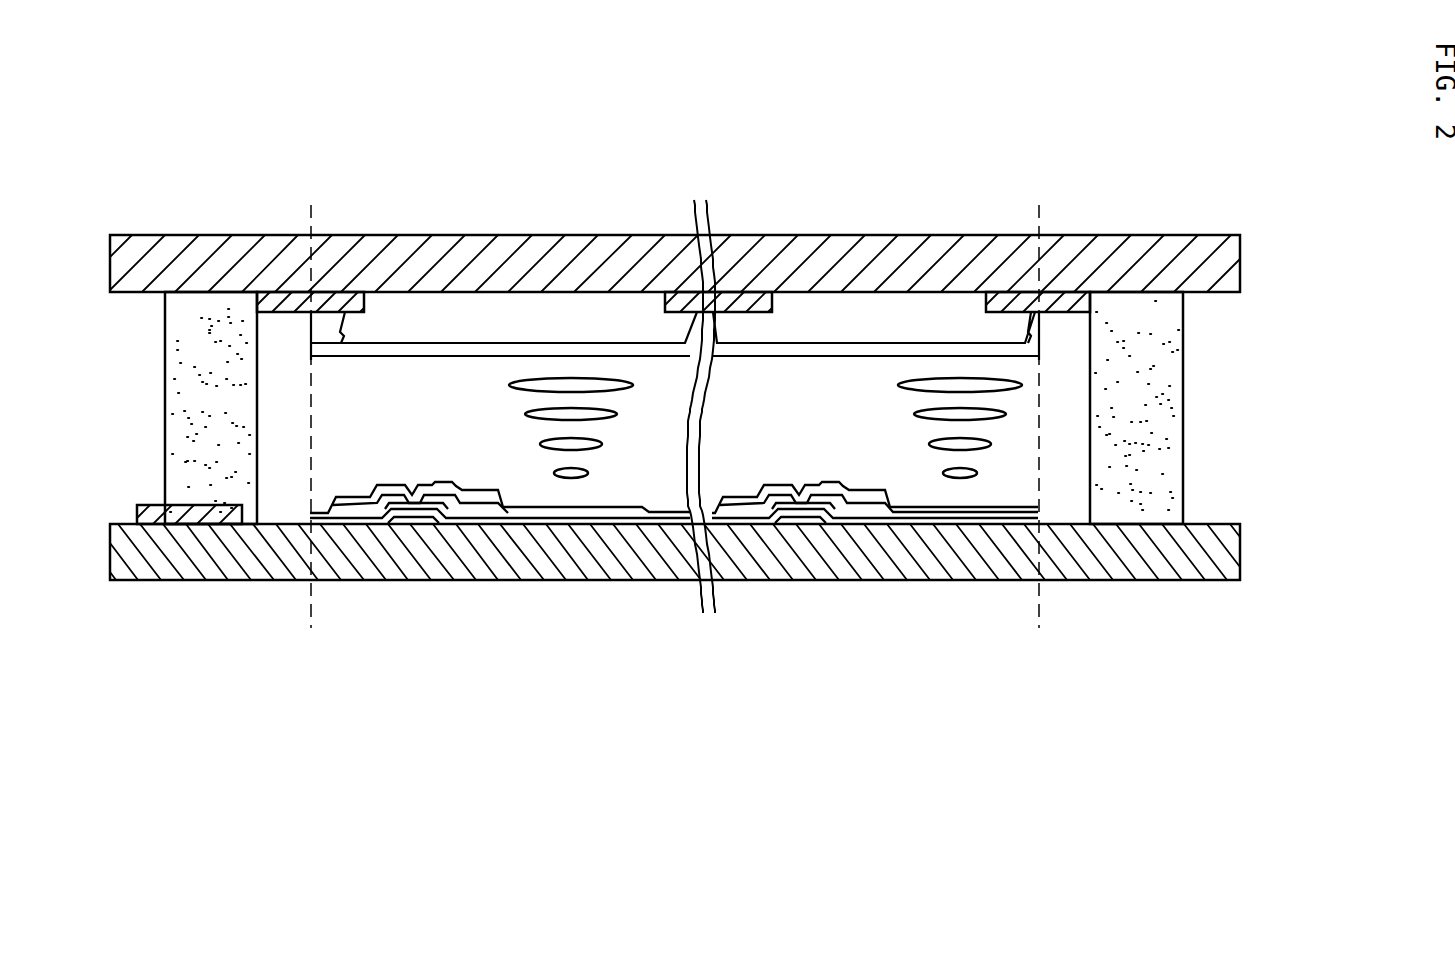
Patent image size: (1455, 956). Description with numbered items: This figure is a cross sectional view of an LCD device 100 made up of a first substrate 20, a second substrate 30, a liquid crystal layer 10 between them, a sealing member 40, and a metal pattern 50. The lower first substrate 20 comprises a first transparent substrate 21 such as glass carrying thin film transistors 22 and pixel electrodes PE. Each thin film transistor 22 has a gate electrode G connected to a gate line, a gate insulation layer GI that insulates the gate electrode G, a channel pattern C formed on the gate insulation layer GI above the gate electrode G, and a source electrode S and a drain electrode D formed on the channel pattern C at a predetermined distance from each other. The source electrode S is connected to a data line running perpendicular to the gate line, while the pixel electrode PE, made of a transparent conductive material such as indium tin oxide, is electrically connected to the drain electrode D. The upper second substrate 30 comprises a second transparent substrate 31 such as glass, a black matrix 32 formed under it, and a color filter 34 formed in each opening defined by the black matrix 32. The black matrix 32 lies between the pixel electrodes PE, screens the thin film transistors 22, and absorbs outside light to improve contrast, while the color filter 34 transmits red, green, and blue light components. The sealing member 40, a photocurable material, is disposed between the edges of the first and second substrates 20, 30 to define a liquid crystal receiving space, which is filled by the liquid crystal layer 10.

The LCD device 100 is at (1012, 138).
The second substrate 30 is at (1255, 260).
The second transparent substrate 31 is at (513, 255).
The black matrix 32 is at (325, 292).
The color filter 34 is at (817, 310).
The sealing member 40 is at (175, 408).
The metal pattern 50 is at (150, 503).
The liquid crystal layer 10 is at (957, 478).
The first substrate 20 is at (1255, 550).
The first transparent substrate 21 is at (1120, 582).
The thin film transistor 22 is at (742, 656).
The source electrode S is at (738, 507).
The channel pattern C is at (762, 508).
The gate electrode G is at (805, 517).
The gate insulation layer GI is at (887, 500).
The drain electrode D is at (866, 492).
The pixel electrode PE is at (830, 482).